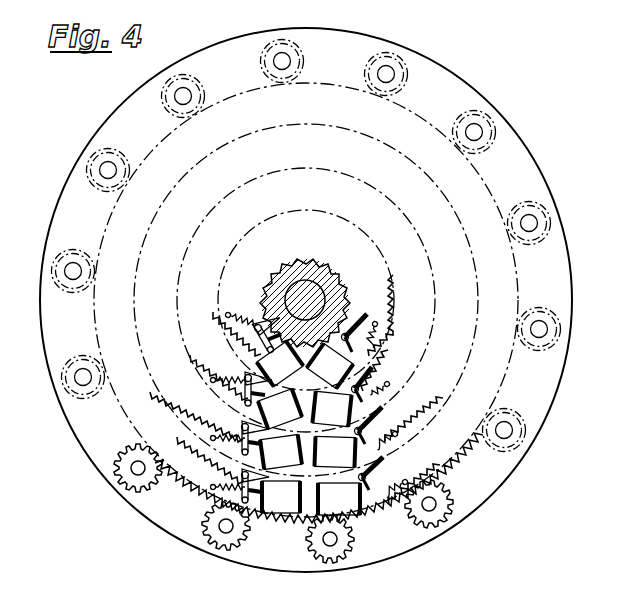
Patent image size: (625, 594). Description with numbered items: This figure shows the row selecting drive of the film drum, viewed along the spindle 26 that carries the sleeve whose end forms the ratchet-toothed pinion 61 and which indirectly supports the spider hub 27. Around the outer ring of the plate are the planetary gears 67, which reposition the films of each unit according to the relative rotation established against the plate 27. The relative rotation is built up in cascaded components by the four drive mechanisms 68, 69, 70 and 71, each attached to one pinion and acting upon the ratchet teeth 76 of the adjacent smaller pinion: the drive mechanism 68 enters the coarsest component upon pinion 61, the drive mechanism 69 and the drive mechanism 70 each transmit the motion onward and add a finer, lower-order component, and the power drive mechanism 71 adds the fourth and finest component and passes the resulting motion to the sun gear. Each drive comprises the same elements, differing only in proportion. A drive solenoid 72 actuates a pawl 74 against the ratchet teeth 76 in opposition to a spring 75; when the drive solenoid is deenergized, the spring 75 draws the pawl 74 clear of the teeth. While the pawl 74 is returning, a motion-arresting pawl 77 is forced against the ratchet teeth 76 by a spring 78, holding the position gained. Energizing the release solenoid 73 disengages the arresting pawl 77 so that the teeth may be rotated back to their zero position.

The spider hub 27 is at (124, 118).
The planetary gears 67 is at (392, 73).
The horizontal spindle 26 is at (312, 272).
The pinion 61 is at (290, 262).
The ratchet teeth 76 is at (272, 312).
The drive mechanism 68 is at (256, 362).
The drive mechanism 69 is at (257, 414).
The drive mechanism 70 is at (258, 462).
The power drive mechanism 71 is at (285, 521).
The drive solenoid 72 is at (280, 505).
The release solenoid 73 is at (344, 500).
The pawl 74 is at (252, 322).
The spring 75 is at (223, 312).
The motion-arresting pawl 77 is at (350, 332).
The spring 78 is at (377, 324).